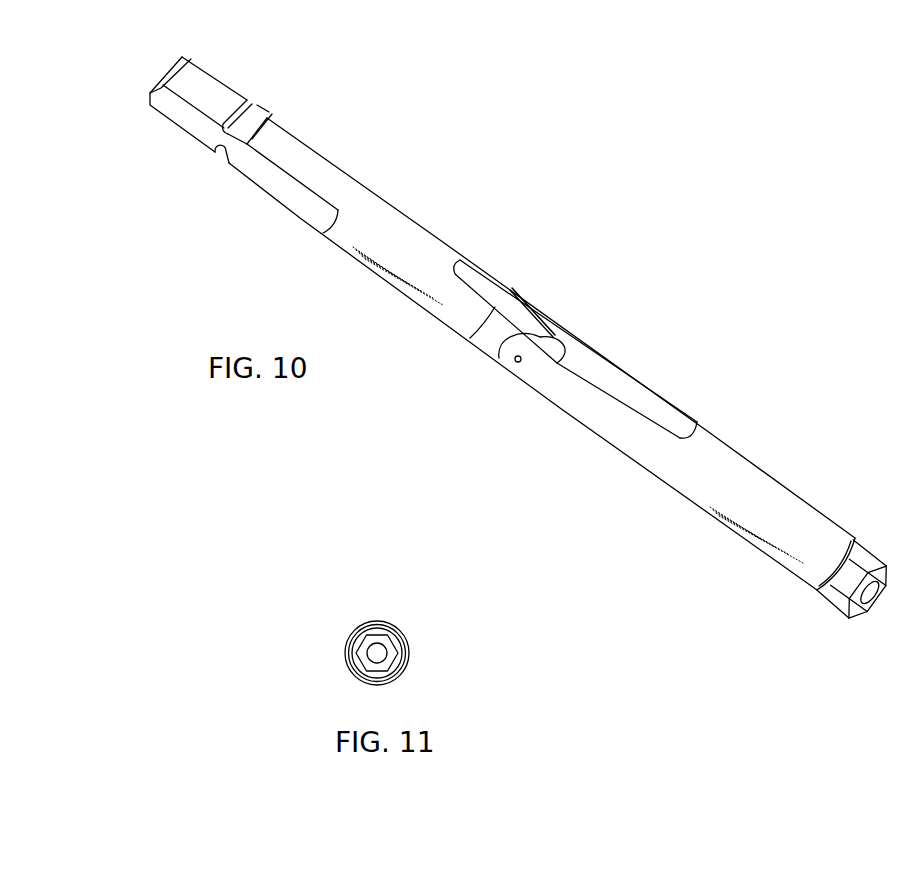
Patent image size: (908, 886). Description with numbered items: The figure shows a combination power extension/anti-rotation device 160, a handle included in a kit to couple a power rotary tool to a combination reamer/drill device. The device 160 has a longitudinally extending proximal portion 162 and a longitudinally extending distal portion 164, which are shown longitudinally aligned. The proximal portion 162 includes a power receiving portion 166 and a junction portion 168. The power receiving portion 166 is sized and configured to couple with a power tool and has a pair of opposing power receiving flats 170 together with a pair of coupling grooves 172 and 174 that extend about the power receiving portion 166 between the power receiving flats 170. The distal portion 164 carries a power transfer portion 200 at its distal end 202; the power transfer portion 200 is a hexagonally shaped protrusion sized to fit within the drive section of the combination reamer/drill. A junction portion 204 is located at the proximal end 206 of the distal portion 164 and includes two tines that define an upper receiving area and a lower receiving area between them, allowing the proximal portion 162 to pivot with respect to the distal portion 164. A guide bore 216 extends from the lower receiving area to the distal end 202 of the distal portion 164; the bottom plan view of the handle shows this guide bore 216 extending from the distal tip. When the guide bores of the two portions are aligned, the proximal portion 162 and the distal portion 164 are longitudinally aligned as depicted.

In FIG. 10, the combination power extension/anti-rotation device 160 is at (572, 115).
In FIG. 10, the proximal portion 162 is at (440, 146).
In FIG. 10, the distal portion 164 is at (778, 358).
In FIG. 10, the power receiving portion 166 is at (210, 205).
In FIG. 10, the junction portion 168 is at (449, 358).
In FIG. 10, the power receiving flats 170 is at (192, 100).
In FIG. 10, the coupling groove 172 is at (256, 94).
In FIG. 10, the coupling groove 174 is at (223, 165).
In FIG. 10, the power transfer portion 200 is at (856, 541).
In FIG. 11, the power transfer portion 200 is at (390, 634).
In FIG. 10, the distal end 202 is at (805, 632).
In FIG. 10, the junction portion 204 is at (529, 420).
In FIG. 10, the proximal end 206 is at (563, 302).
In FIG. 11, the guide bore 216 is at (363, 662).